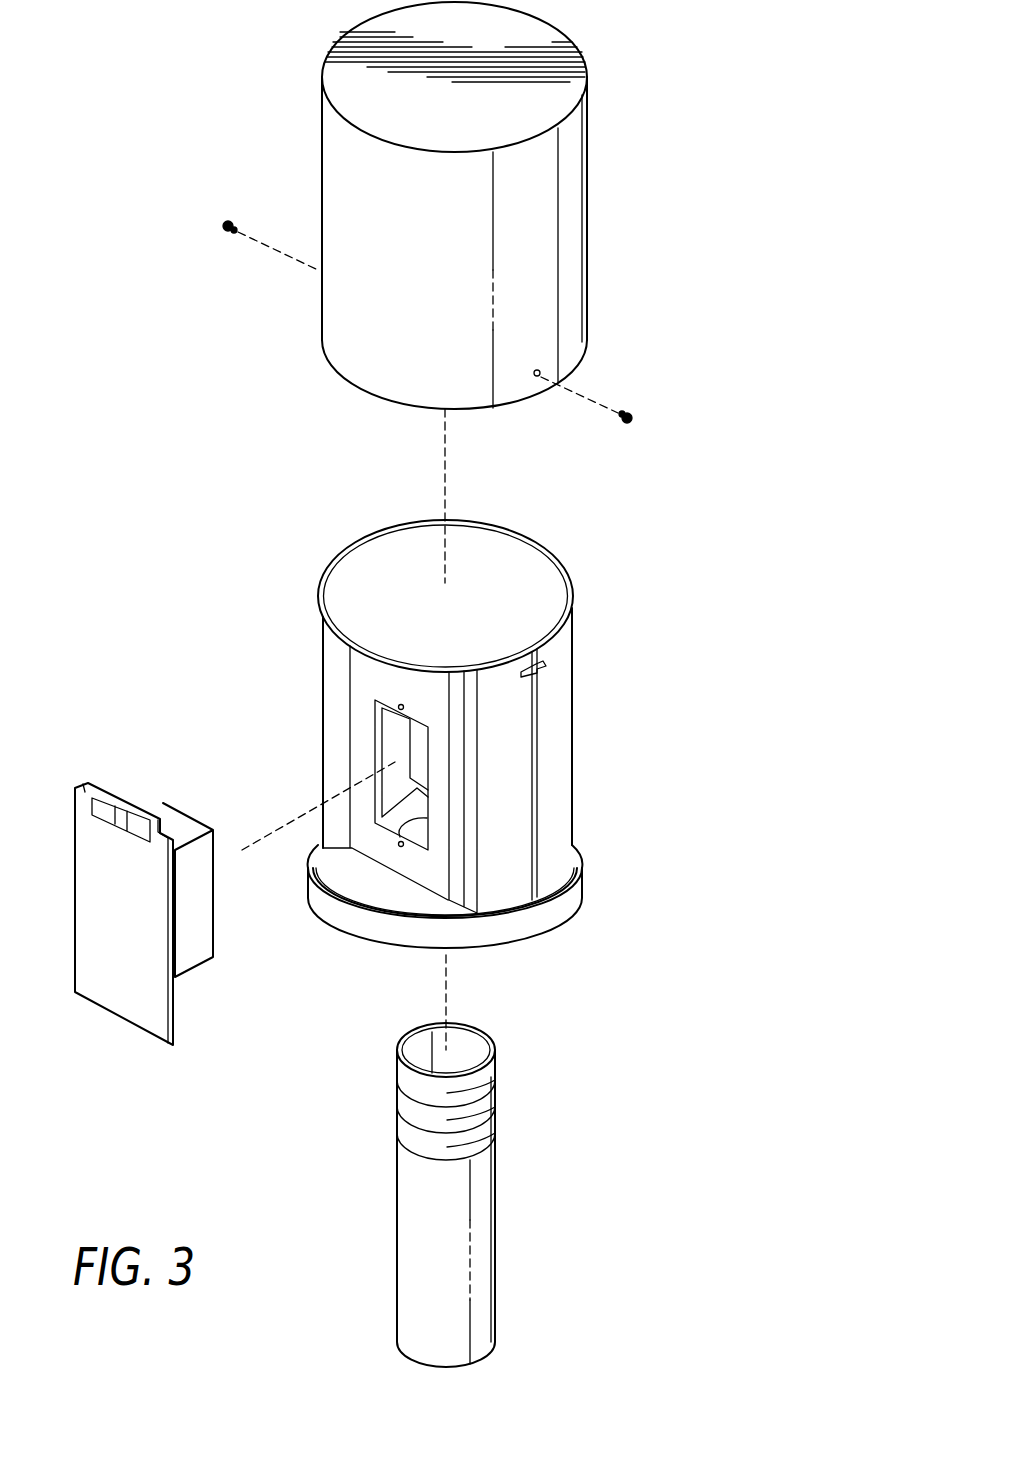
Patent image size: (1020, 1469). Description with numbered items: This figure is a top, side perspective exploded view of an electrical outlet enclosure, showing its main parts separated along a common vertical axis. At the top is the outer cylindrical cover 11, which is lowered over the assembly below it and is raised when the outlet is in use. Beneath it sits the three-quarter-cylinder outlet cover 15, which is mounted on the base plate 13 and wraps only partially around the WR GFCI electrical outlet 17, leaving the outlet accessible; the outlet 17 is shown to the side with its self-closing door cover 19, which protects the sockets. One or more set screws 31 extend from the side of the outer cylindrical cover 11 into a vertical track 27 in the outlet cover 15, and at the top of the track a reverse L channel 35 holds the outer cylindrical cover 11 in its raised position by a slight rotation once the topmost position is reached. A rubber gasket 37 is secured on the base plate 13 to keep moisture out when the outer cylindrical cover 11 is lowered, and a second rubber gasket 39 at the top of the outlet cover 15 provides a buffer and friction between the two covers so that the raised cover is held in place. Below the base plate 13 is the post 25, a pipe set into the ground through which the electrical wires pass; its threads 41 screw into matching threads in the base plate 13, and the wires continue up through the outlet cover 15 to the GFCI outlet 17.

The outer cylindrical cover 11 is at (572, 170).
The base plate 13 is at (548, 910).
The ¾-cylinder outlet cover 15 is at (333, 675).
The GFCI electrical outlet 17 is at (195, 922).
The door cover 19 is at (108, 893).
The post 25 is at (477, 1253).
The slot 27 is at (540, 745).
The set screws 31 is at (636, 414).
The reverse L channel 35 is at (545, 663).
The rubber gasket 37 is at (578, 840).
The second rubber gasket 39 is at (567, 572).
The threads 41 is at (485, 1100).